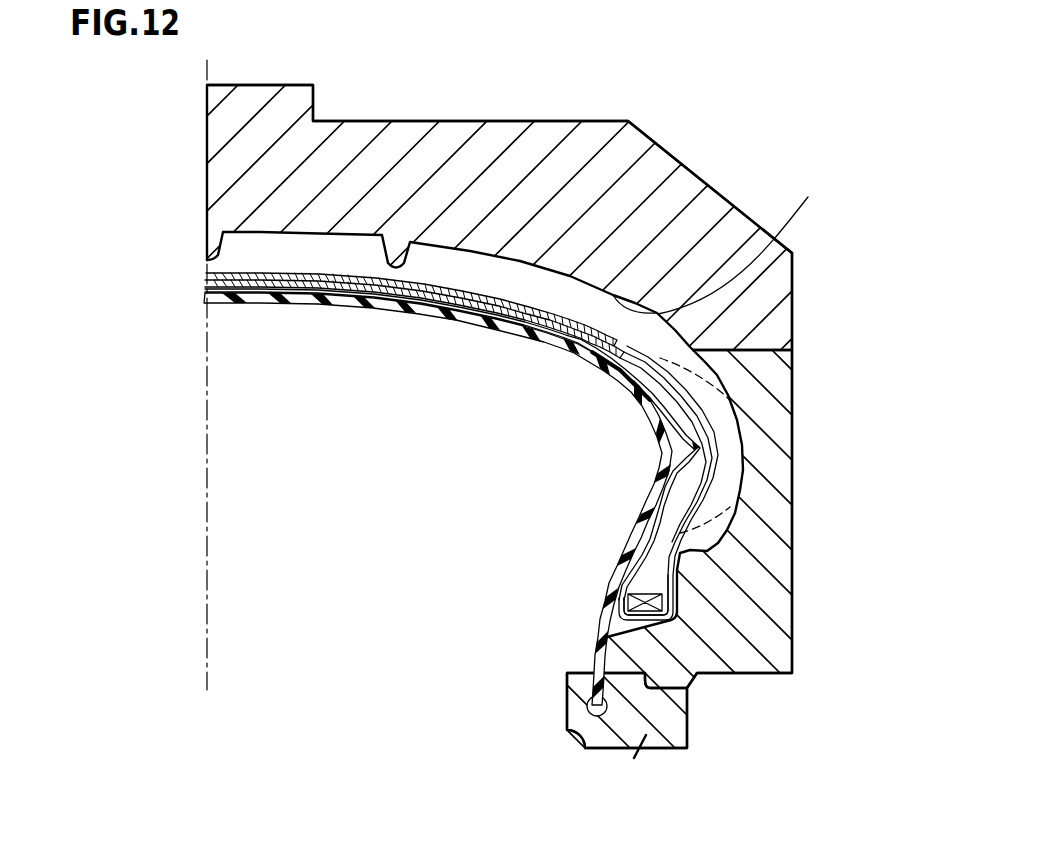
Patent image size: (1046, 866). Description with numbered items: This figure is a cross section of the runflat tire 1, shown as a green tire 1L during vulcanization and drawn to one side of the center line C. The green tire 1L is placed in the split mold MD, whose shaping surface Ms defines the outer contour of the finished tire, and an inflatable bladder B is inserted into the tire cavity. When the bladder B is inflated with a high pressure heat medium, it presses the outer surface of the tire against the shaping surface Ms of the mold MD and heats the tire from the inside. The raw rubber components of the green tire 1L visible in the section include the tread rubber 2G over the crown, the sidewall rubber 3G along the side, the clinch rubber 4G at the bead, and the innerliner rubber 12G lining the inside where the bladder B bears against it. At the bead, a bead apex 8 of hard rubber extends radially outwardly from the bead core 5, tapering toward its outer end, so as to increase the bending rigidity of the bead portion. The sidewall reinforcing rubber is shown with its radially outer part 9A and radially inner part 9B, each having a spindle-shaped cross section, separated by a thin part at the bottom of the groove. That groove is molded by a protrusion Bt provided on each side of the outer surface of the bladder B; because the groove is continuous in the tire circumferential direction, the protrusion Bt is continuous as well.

The split mold MD is at (735, 148).
The tread rubber 2G is at (490, 270).
The shaping surface Ms is at (729, 242).
The sidewall rubber 3G is at (735, 428).
The clinch rubber 4G is at (690, 550).
The runflat tire 1 is at (388, 411).
The green tire 1L is at (245, 247).
The inflatable bladder B is at (522, 327).
The protrusion Bt is at (700, 442).
The radially outer part 9A is at (667, 398).
The radially inner part 9B is at (687, 490).
The bead apex 8 is at (653, 553).
The innerliner rubber 12G is at (630, 563).
The bead core 5 is at (633, 605).
The tire equator line C is at (207, 548).